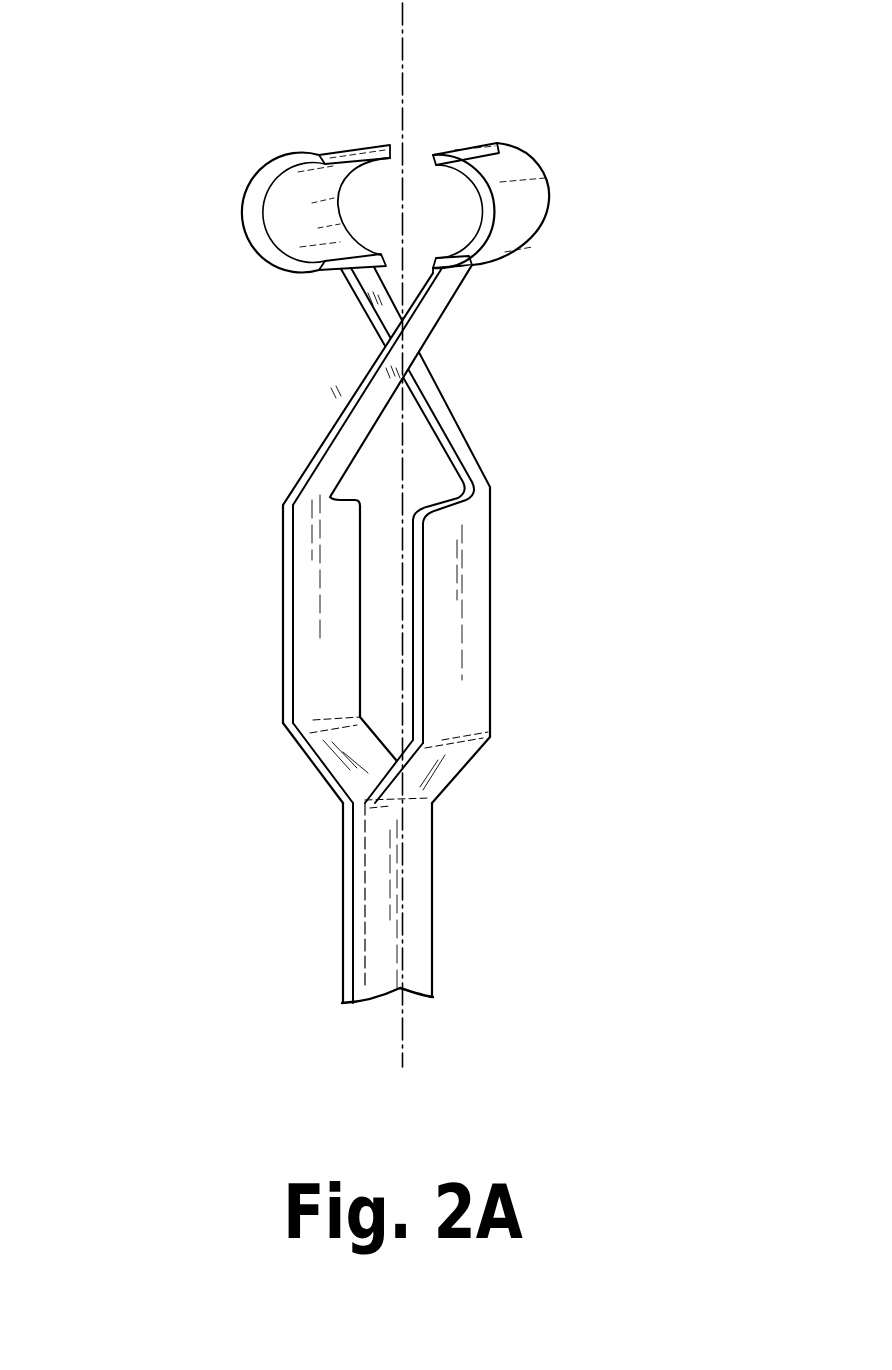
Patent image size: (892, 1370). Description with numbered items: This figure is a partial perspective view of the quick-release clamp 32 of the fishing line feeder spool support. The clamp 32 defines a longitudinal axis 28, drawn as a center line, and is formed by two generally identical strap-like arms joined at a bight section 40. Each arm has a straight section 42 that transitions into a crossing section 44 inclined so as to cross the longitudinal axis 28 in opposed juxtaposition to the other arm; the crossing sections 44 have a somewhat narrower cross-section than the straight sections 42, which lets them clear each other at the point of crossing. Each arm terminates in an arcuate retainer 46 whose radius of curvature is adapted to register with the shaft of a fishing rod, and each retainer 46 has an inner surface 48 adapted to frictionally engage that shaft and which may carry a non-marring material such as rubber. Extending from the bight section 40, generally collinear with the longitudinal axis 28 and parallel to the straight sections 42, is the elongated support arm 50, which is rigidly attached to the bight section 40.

The longitudinal axis 28 is at (406, 33).
The quick-release clamp 32 is at (397, 573).
The bight section 40 is at (308, 760).
The straight section 42 is at (320, 602).
The crossing section 44 is at (353, 422).
The arcuate retainer 46 is at (287, 185).
The inner surface 48 is at (325, 218).
The support arm 50 is at (395, 902).